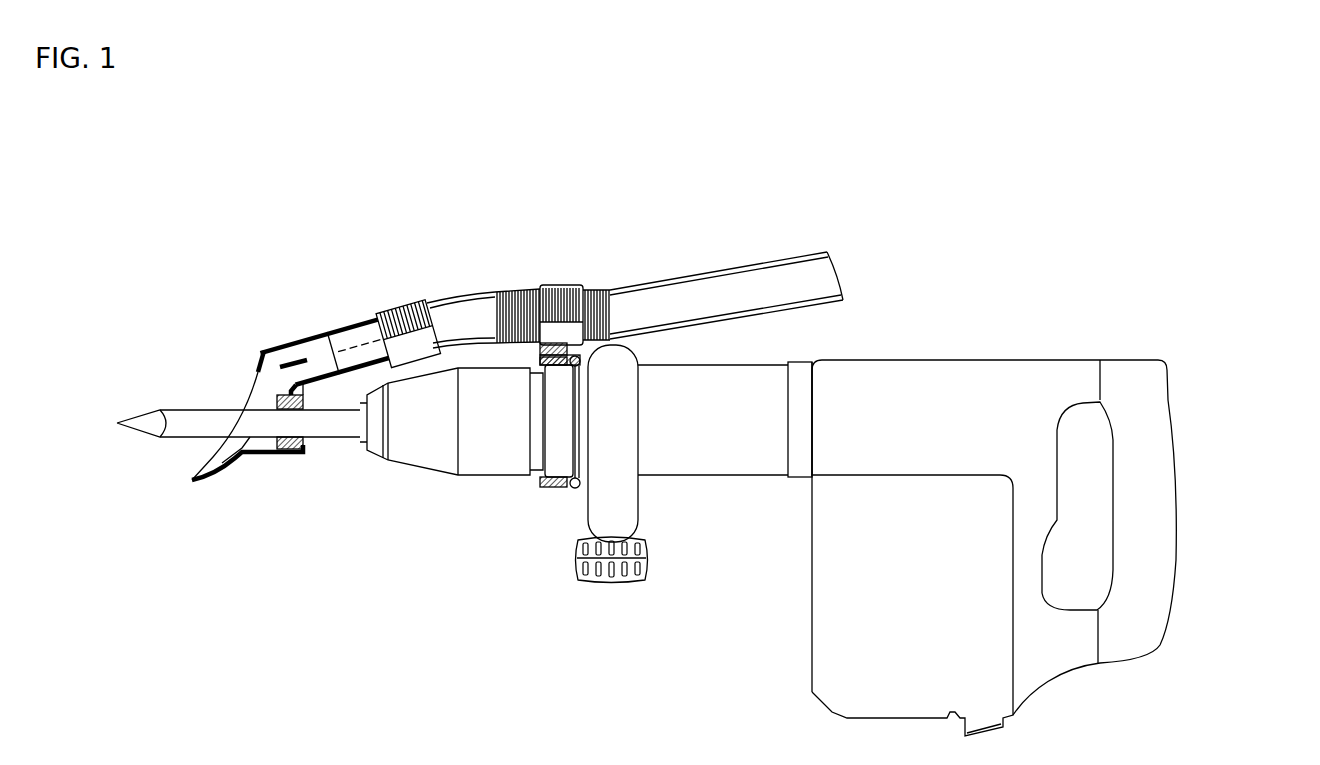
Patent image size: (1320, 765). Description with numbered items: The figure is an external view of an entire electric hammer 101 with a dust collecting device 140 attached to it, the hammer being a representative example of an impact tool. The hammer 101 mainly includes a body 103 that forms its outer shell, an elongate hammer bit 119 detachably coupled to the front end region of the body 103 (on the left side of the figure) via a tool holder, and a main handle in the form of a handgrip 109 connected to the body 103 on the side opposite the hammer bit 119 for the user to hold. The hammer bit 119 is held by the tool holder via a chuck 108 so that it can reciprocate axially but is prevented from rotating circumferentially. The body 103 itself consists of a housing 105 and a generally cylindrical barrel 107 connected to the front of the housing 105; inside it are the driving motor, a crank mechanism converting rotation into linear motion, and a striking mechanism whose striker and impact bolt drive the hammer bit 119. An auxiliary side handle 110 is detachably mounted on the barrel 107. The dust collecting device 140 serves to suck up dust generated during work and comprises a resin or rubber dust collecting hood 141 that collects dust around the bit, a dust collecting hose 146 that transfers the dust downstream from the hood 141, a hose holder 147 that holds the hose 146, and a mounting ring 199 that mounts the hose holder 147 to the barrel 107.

The electric hammer 101 is at (1140, 303).
The body 103 is at (976, 356).
The housing 105 is at (815, 616).
The barrel 107 is at (711, 473).
The chuck 108 is at (447, 463).
The handgrip 109 is at (1173, 428).
The side handle 110 is at (604, 580).
The hammer bit 119 is at (190, 414).
The dust collecting device 140 is at (383, 275).
The dust collecting hood 141 is at (265, 351).
The dust collecting hose 146 is at (518, 290).
The hose holder 147 is at (565, 286).
The mounting ring 199 is at (555, 486).